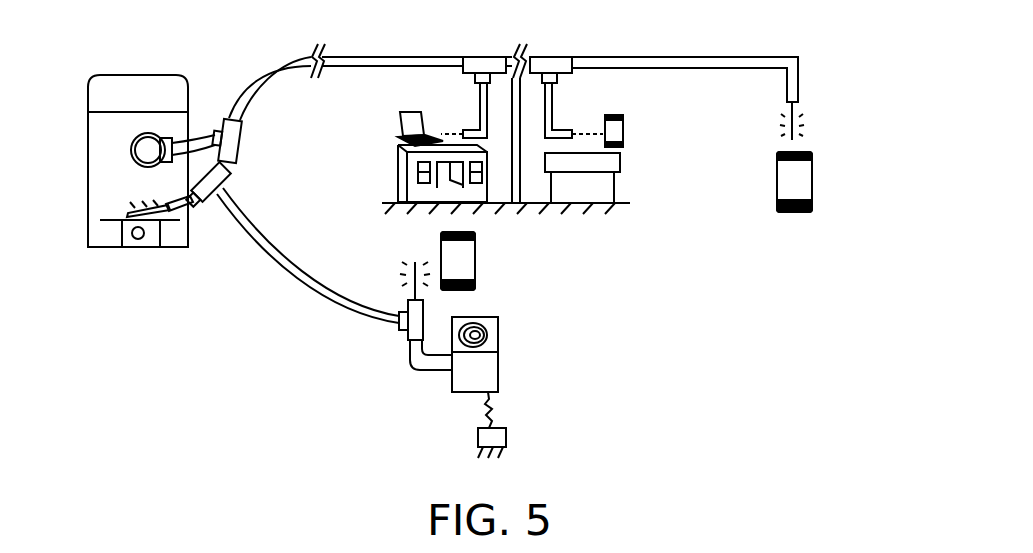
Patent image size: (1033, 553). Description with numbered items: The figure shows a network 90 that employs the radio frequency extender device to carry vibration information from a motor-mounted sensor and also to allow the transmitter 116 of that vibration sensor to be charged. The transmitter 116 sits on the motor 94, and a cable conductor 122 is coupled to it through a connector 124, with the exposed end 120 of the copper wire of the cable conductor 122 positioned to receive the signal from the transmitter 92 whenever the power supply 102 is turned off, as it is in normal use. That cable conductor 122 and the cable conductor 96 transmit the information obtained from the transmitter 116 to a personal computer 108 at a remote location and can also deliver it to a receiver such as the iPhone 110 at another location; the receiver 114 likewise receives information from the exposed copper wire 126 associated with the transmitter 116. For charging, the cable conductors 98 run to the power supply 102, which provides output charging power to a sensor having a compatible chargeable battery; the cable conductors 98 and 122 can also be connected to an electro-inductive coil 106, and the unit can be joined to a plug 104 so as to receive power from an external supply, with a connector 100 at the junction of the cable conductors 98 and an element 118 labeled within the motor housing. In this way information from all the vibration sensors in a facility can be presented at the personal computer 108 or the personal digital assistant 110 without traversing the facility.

The network 90 is at (676, 42).
The transmitter 92 is at (487, 258).
The motor 94 is at (169, 74).
The cable conductor 96 is at (258, 96).
The cable conductors 98 is at (259, 231).
The wireless transmitter connector 100 is at (391, 280).
The power supply 102 is at (516, 355).
The plug 104 is at (518, 438).
The electro-inductive coil 106 is at (507, 328).
The personal computer 108 is at (400, 133).
The iPhone 110 is at (630, 138).
The receiver 114 is at (815, 180).
The transmitter 116 is at (137, 251).
The motor housing 118 is at (106, 132).
The exposed end 120 is at (113, 193).
The cable conductor 122 is at (200, 213).
The connector 124 is at (200, 118).
The exposed copper wire 126 is at (812, 117).